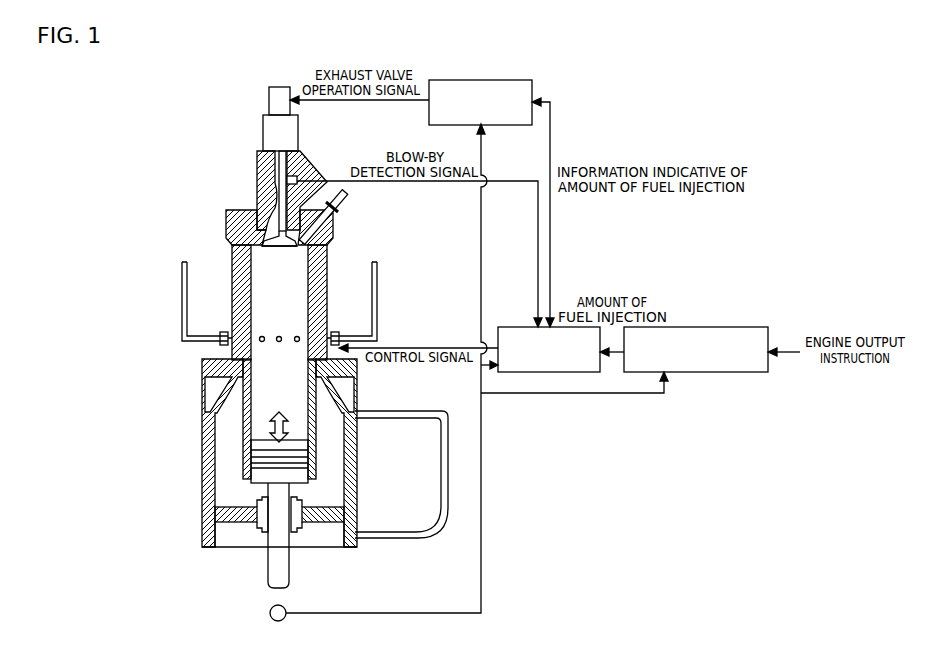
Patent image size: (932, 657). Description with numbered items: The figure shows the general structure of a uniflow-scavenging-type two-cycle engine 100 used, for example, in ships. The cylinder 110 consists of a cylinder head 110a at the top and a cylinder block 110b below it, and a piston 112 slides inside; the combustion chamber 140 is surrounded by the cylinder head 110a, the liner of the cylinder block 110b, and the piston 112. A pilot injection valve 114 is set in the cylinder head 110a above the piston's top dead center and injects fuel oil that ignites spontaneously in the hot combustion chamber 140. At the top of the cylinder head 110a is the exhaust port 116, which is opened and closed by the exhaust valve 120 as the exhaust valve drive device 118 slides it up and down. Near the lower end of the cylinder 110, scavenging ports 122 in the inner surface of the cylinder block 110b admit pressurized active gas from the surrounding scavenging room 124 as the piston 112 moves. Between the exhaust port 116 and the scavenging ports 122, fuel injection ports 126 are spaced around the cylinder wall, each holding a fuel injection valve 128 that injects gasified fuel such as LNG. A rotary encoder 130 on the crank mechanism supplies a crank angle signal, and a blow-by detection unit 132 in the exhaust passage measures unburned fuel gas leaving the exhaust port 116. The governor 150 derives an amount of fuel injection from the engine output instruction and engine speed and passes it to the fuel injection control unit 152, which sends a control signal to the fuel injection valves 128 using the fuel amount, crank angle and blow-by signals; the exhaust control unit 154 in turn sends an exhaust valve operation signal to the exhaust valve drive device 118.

The uniflow-scavenging-type two-cycle engine 100 is at (274, 72).
The cylinder 110 is at (178, 213).
The cylinder head 110a is at (232, 226).
The cylinder block 110b is at (234, 260).
The piston 112 is at (266, 476).
The pilot injection valve 114 is at (340, 204).
The exhaust port 116 is at (273, 223).
The exhaust valve drive device 118 is at (278, 132).
The exhaust valve 120 is at (296, 246).
The scavenging ports 122 is at (247, 432).
The scavenging room 124 is at (350, 485).
The fuel injection ports 126 is at (302, 350).
The fuel injection valves 128 is at (220, 336).
The rotary encoder 130 is at (283, 607).
The blow-by detection unit 132 is at (297, 178).
The combustion chamber 140 is at (295, 276).
The governor (speed controller) 150 is at (677, 326).
The fuel injection control unit 152 is at (516, 326).
The exhaust control unit 154 is at (510, 80).